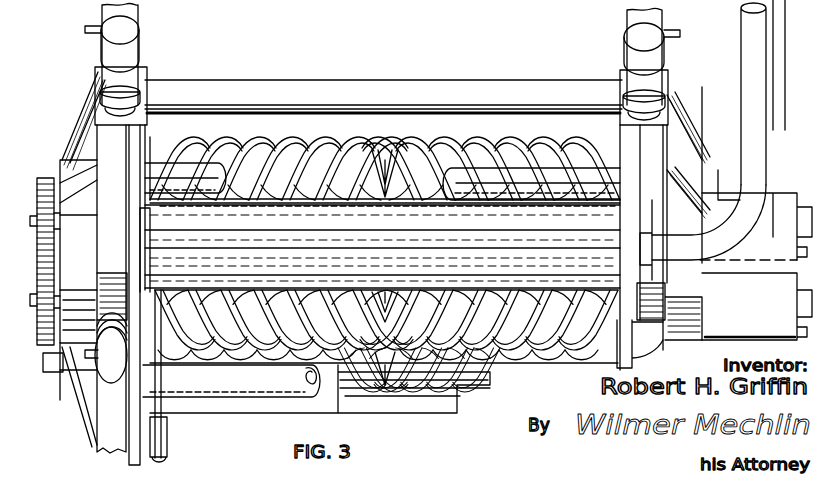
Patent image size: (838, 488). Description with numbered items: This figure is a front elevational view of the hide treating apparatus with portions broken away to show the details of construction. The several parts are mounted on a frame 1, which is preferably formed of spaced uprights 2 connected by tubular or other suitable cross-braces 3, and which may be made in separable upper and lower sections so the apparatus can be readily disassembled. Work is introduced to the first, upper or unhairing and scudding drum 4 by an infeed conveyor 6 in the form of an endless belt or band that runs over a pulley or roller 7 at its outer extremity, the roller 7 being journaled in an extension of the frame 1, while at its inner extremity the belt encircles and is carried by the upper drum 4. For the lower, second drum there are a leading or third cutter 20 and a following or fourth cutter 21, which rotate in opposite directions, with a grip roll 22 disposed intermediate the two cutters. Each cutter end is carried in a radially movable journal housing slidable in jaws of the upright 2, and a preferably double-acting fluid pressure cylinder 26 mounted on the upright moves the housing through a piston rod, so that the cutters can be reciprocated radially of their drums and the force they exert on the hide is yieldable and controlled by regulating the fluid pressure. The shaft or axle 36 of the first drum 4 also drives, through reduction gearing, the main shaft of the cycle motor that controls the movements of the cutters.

The frame 1 is at (434, 70).
The uprights 2 is at (710, 288).
The cross-braces 3 is at (283, 80).
The upper drum 4 is at (376, 7).
The infeed conveyor 6 is at (448, 217).
The roller 7 is at (147, 222).
The third cutter 20 is at (496, 356).
The fourth cutter 21 is at (468, 401).
The grip roll 22 is at (487, 382).
The fluid pressure cylinder 26 is at (146, 10).
The shaft of the first drum 36 is at (44, 170).